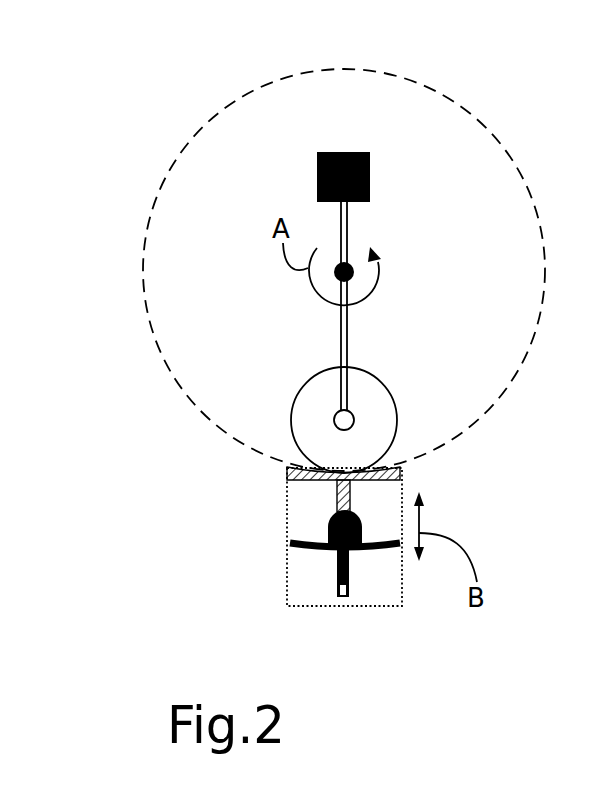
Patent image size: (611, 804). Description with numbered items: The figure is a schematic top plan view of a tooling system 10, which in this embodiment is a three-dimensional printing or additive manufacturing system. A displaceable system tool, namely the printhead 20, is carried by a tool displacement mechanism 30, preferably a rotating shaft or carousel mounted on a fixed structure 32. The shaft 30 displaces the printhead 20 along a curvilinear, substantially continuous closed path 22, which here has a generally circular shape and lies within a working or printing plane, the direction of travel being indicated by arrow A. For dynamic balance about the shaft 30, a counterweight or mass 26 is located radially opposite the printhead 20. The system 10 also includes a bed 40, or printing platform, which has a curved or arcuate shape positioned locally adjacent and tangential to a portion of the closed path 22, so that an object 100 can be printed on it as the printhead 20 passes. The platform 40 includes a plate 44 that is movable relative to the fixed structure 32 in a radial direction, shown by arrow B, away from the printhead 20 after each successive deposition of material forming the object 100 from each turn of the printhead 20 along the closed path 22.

The tooling system 10 is at (158, 567).
The printhead 20 is at (398, 420).
The closed path 22 is at (155, 197).
The counterweight 26 is at (370, 172).
The tool displacement mechanism 30 is at (352, 262).
The fixed structure 32 is at (287, 572).
The bed 40 is at (320, 542).
The plate 44 is at (372, 552).
The object 100 is at (355, 515).